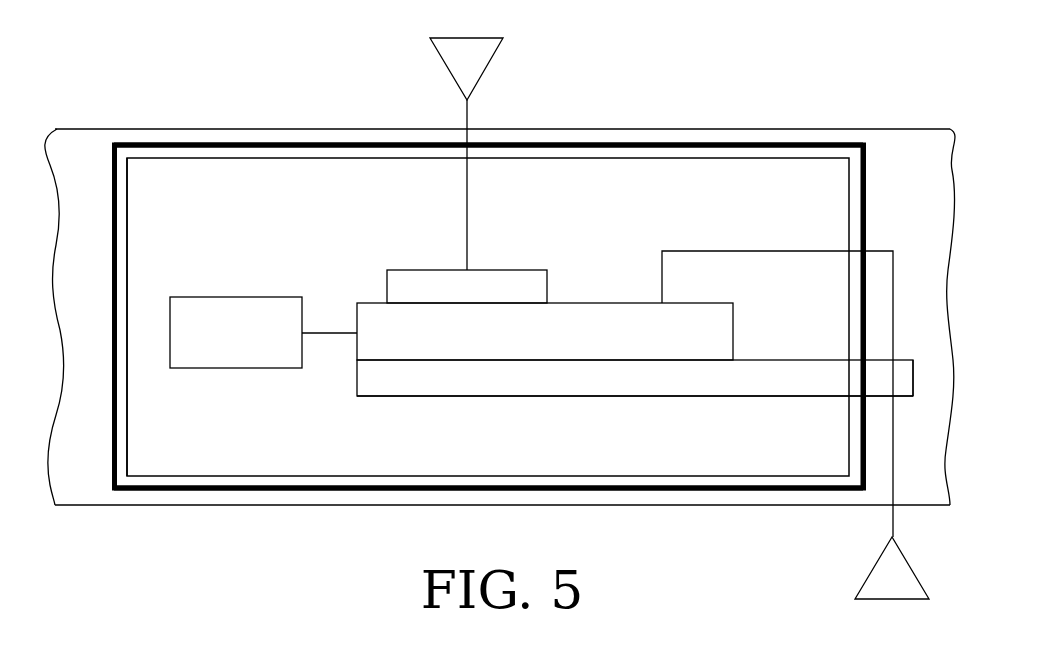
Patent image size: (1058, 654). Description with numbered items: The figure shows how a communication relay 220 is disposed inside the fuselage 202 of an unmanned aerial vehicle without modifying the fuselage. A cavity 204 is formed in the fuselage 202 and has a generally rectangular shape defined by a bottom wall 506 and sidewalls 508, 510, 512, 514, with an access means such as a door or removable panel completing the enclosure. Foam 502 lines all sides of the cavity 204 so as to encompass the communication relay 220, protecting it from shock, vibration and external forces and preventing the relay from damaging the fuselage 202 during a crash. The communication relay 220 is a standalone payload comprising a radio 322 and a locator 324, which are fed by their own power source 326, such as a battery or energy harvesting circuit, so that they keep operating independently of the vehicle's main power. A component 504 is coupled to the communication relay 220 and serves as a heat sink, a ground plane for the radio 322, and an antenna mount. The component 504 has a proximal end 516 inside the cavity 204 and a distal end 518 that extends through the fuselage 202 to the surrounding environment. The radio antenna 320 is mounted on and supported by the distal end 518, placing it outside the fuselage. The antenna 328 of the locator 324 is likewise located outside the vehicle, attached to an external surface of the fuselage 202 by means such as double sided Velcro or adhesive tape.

The fuselage 202 is at (183, 129).
The cavity 204 is at (98, 145).
The communication relay 220 is at (750, 215).
The foam 502 is at (291, 158).
The bottom wall 506 is at (122, 246).
The sidewall 508 is at (113, 272).
The sidewall 510 is at (360, 143).
The sidewall 512 is at (866, 204).
The sidewall 514 is at (608, 490).
The proximal end 516 is at (388, 405).
The distal end 518 is at (908, 404).
The radio antenna 320 is at (795, 425).
The radio 322 is at (545, 331).
The locator 324 is at (467, 286).
The power source 326 is at (263, 332).
The antenna 328 is at (466, 154).
The component 504 is at (635, 378).